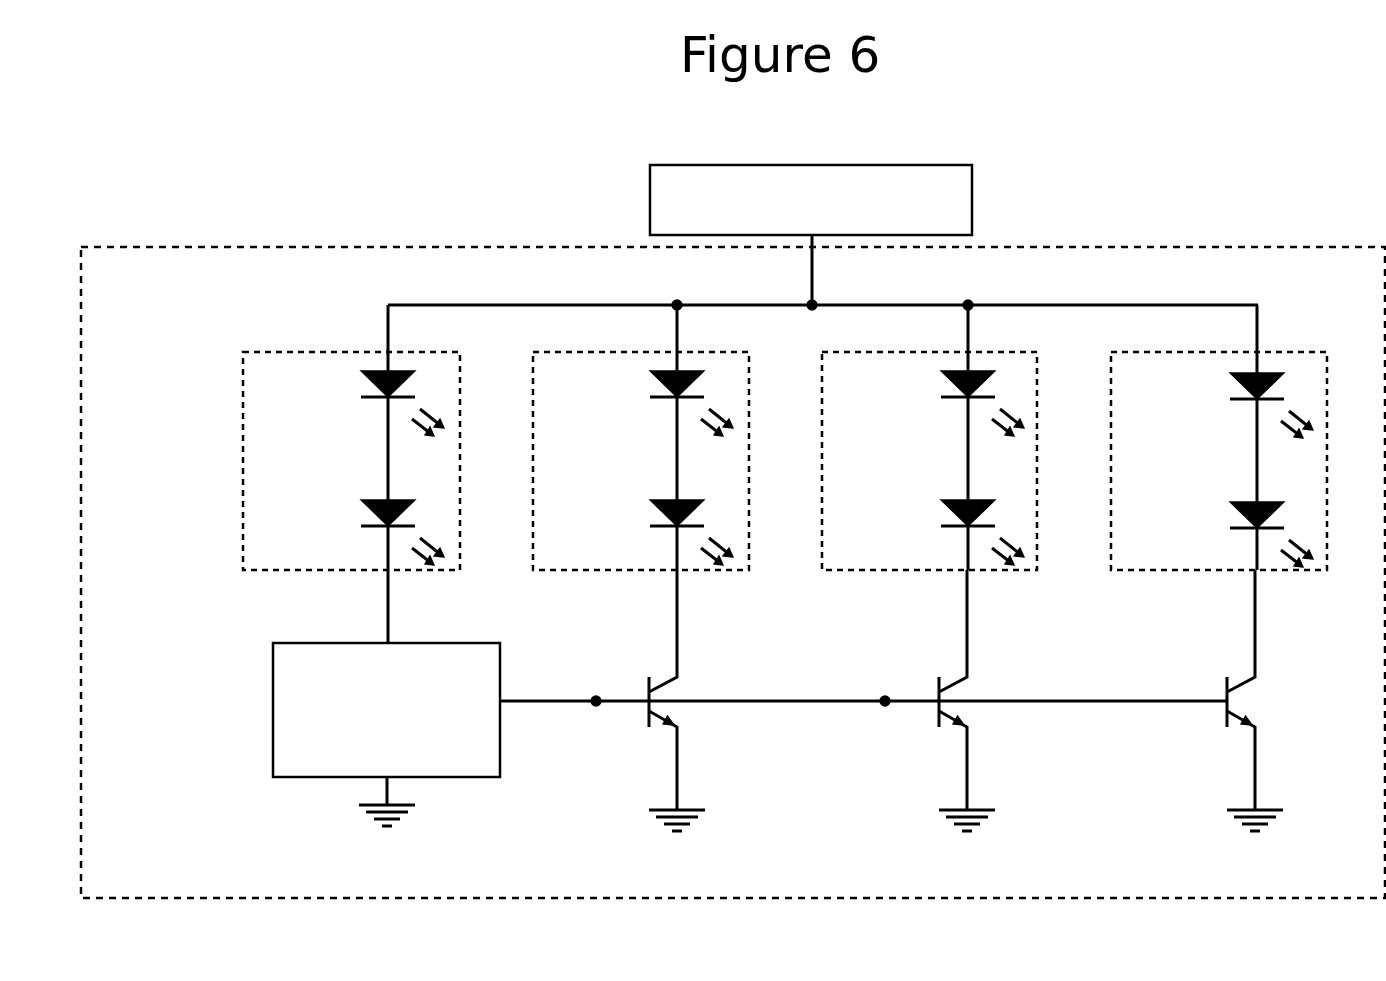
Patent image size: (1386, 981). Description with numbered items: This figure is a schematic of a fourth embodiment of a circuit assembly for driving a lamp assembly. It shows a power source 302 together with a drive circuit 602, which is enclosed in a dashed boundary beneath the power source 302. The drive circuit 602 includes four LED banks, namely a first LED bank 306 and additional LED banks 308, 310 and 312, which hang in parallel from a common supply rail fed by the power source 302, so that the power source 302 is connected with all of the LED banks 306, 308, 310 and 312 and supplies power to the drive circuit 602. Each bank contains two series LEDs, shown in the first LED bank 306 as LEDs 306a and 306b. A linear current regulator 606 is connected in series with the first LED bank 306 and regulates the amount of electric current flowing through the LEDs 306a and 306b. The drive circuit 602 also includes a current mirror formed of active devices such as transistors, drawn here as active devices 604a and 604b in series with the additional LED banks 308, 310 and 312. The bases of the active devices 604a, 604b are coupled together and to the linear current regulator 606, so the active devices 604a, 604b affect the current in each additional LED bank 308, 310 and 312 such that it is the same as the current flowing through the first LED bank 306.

The drive circuit 602 is at (345, 247).
The power source 302 is at (972, 202).
The first LED bank 306 is at (255, 352).
The LED bank 308 is at (545, 352).
The LED bank 310 is at (834, 352).
The LED bank 312 is at (1123, 352).
The LED 306a is at (375, 500).
The LED 306b is at (375, 371).
The linear current regulator 606 is at (273, 702).
The active device 604a is at (650, 711).
The active device 604b is at (939, 712).